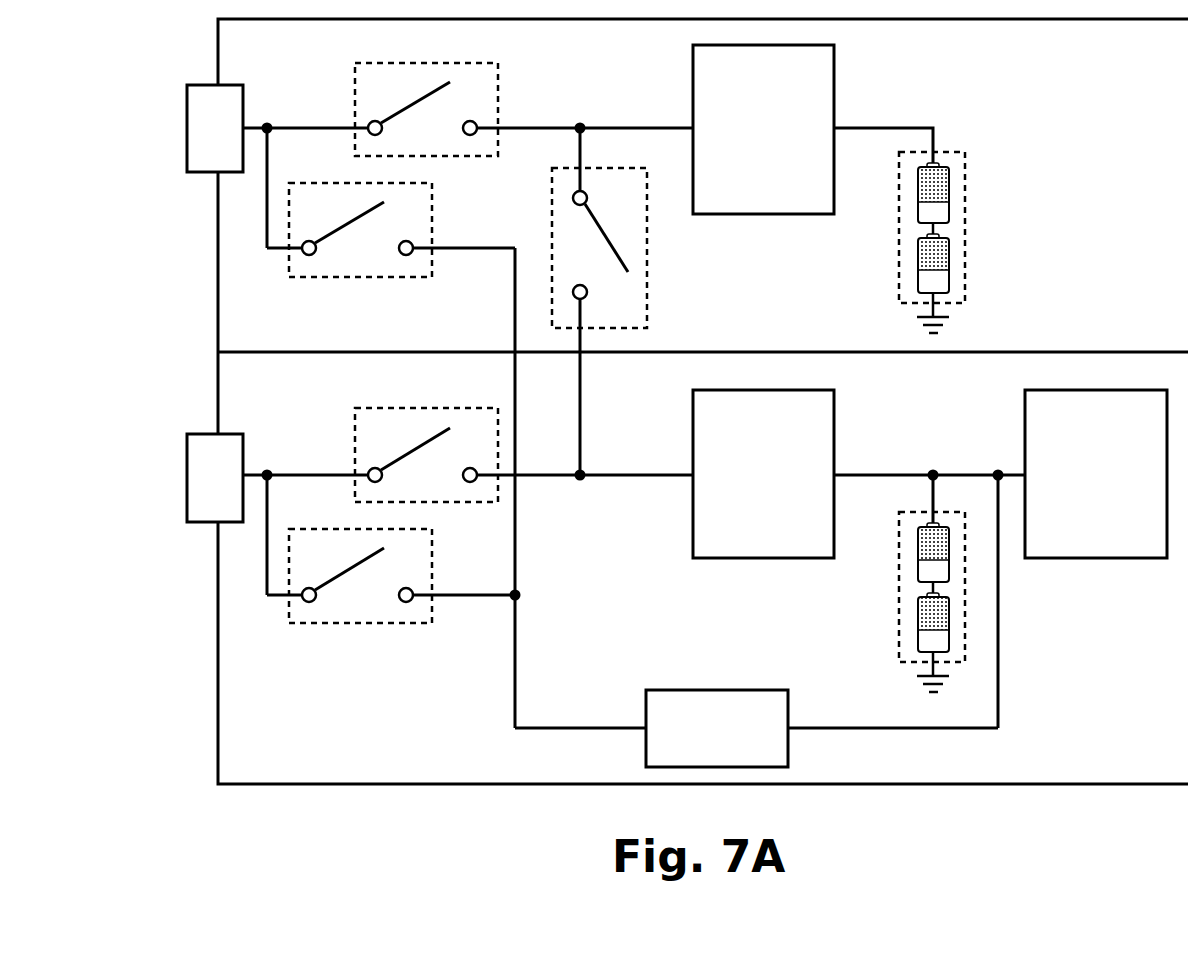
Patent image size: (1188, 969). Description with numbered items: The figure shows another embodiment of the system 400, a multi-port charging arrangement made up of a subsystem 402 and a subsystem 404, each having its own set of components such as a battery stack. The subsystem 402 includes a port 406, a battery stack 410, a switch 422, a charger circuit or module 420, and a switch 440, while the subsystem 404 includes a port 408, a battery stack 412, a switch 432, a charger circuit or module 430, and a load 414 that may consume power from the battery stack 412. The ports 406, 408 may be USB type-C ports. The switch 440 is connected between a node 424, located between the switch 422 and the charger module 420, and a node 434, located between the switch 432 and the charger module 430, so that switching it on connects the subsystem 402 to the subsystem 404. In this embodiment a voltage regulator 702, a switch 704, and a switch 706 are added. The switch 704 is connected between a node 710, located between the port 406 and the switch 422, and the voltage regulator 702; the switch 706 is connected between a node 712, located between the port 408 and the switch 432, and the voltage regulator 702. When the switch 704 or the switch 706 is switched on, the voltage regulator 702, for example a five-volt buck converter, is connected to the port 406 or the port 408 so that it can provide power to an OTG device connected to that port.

The system 400 is at (549, 845).
The subsystem 402 is at (1169, 71).
The subsystem 404 is at (1177, 684).
The port 406 is at (187, 131).
The port 408 is at (187, 479).
The battery stack 410 is at (899, 267).
The battery stack 412 is at (899, 625).
The load 414 is at (1117, 488).
The charger circuit or module 420 is at (784, 141).
The switch 422 is at (355, 78).
The node 424 is at (579, 111).
The charger circuit or module 430 is at (784, 488).
The switch 432 is at (355, 423).
The node 434 is at (581, 492).
The switch 440 is at (552, 255).
The voltage regulator 702 is at (738, 741).
The switch 704 is at (338, 277).
The switch 706 is at (338, 623).
The node 710 is at (272, 114).
The node 712 is at (272, 459).